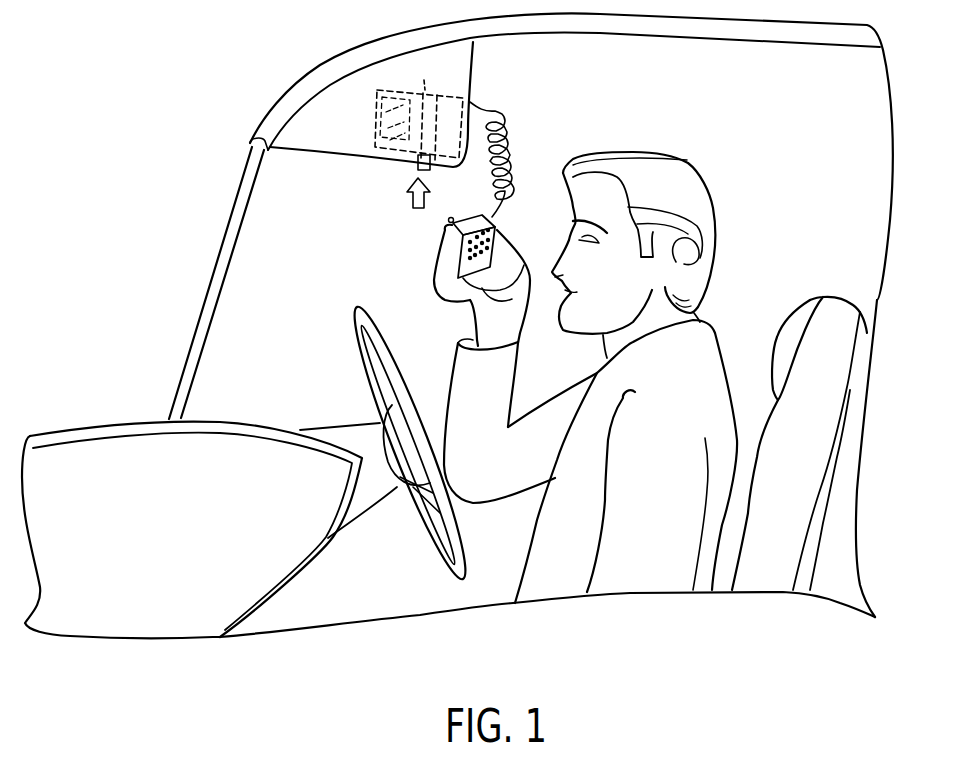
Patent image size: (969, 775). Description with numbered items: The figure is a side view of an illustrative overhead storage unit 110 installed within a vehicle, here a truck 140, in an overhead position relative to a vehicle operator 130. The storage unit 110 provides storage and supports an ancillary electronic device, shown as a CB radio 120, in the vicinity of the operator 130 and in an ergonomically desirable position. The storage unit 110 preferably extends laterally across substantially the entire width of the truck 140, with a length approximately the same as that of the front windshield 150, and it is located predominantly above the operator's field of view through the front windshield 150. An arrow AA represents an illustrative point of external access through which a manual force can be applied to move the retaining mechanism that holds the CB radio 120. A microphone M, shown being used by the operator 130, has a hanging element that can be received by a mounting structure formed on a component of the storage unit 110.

The overhead storage unit 110 is at (367, 101).
The CB radio 120 is at (419, 111).
The operator 130 is at (670, 470).
The truck 140 is at (263, 108).
The front windshield 150 is at (213, 272).
The arrow AA is at (410, 195).
The microphone M is at (498, 233).